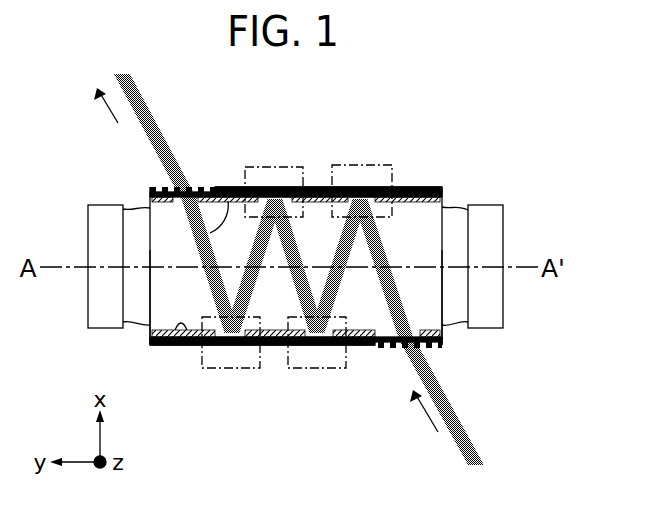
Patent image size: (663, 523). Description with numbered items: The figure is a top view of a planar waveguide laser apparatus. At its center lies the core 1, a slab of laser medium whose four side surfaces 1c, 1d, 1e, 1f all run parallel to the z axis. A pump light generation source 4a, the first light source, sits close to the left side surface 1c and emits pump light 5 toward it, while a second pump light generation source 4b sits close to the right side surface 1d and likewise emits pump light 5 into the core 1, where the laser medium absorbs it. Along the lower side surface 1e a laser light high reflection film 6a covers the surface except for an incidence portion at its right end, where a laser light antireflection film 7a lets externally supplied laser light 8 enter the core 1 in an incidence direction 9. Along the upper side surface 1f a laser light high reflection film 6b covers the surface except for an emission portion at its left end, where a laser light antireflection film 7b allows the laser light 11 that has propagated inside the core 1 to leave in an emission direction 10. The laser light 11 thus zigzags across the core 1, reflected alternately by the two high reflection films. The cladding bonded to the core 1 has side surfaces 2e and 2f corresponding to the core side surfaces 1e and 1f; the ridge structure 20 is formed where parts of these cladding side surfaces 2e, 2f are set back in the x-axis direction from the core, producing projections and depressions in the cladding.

The core 1 is at (323, 213).
The side surface 1c is at (150, 299).
The side surface 1d is at (442, 300).
The side surface 1e is at (173, 345).
The side surface 1f is at (408, 201).
The side surface 2e is at (162, 328).
The side surface 2f is at (325, 214).
The pump light generation source 4a is at (105, 205).
The pump light generation source 4b is at (492, 204).
The pump light 5 is at (140, 208).
The laser light high reflection film 6a is at (275, 347).
The laser light high reflection film 6b is at (308, 187).
The laser light antireflection film 7a is at (428, 347).
The laser light antireflection film 7b is at (198, 186).
The laser light 8 is at (472, 440).
The incidence direction 9 is at (423, 430).
The emission direction 10 is at (108, 118).
The laser light 11 is at (220, 186).
The ridge structure 20 is at (250, 167).